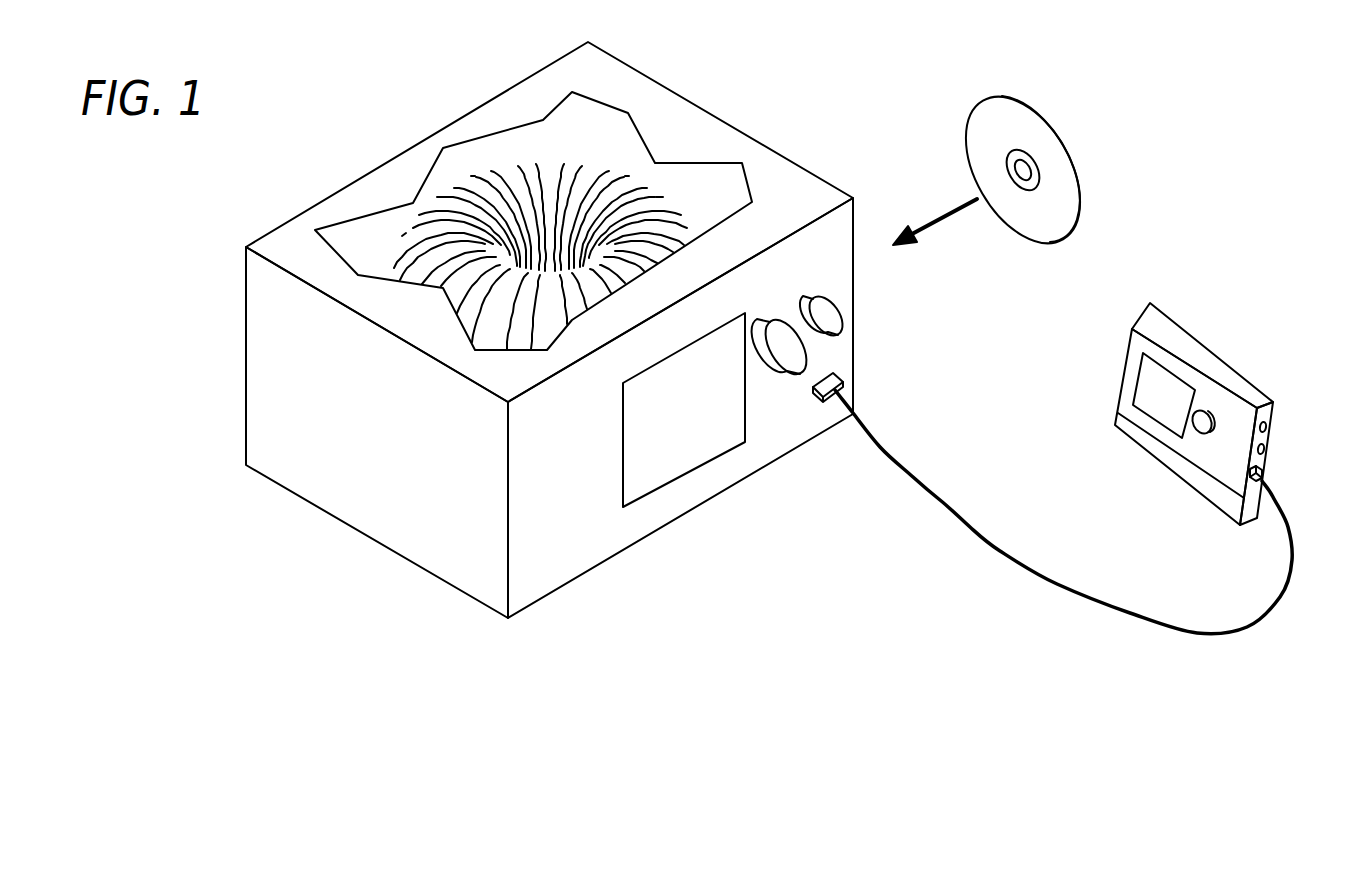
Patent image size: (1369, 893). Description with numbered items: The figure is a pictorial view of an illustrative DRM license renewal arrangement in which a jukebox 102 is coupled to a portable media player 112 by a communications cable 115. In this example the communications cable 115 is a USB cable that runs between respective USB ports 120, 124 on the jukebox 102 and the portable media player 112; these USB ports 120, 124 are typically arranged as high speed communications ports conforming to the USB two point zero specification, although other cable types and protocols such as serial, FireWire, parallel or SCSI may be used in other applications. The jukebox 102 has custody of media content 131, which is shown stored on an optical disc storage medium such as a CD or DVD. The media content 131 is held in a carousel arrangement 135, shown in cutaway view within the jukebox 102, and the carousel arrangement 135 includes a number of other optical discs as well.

The jukebox 102 is at (603, 567).
The carousel arrangement 135 is at (608, 141).
The USB port 120 is at (815, 397).
The communications cable 115 is at (1050, 586).
The portable media player 112 is at (1192, 494).
The USB port 124 is at (1266, 472).
The media content 131 is at (980, 103).